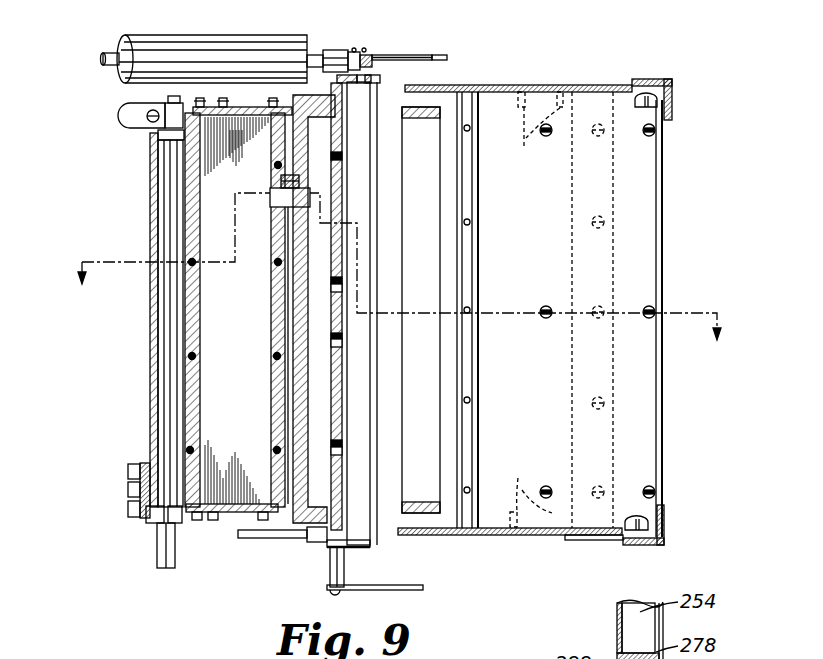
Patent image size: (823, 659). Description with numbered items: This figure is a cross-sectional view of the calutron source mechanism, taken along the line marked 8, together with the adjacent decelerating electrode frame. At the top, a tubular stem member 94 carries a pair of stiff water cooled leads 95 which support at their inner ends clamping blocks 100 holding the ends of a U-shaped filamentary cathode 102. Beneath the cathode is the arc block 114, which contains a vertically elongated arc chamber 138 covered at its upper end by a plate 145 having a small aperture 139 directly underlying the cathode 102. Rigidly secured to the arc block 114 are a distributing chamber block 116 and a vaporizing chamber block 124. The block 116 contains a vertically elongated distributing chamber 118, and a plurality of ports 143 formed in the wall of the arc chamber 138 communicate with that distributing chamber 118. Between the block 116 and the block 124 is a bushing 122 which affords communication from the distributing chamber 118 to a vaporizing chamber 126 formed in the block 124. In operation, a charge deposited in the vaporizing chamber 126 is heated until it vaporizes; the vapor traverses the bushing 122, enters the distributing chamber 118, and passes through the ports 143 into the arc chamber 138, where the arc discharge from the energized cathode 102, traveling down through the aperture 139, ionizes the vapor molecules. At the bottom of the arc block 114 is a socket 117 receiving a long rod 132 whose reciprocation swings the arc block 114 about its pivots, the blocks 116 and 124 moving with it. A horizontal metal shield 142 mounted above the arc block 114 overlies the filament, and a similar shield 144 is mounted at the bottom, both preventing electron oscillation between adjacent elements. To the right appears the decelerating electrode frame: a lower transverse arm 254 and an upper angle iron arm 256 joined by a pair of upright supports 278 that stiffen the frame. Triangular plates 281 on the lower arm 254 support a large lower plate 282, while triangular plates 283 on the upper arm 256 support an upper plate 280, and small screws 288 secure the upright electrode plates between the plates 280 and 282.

The section line 8- 8 is at (396, 282).
The tubular stem member 94 is at (247, 33).
The water cooled leads 95 is at (105, 62).
The clamping blocks 100 is at (333, 53).
The filamentary cathode 102 is at (384, 55).
The arc block 114 is at (362, 546).
The distributing chamber block 116 is at (290, 517).
The socket 117 is at (315, 543).
The distributing chamber 118 is at (308, 372).
The bushing 122 is at (275, 182).
The vaporizing chamber block 124 is at (235, 515).
The vaporizing chamber 126 is at (211, 336).
The long rod 132 is at (288, 540).
The arc chamber 138 is at (362, 194).
The aperture 139 is at (380, 74).
The horizontal metal shield 142 is at (434, 54).
The ports 143 is at (337, 285).
The shield 144 is at (423, 588).
The plate 145 is at (372, 54).
The lower transverse arm 254 is at (666, 528).
The upper angle iron arm 256 is at (673, 105).
The upright supports 278 is at (665, 252).
The upper plate 280 is at (495, 84).
The triangular plates 281 is at (608, 541).
The lower plate 282 is at (530, 537).
The triangular plates 283 is at (655, 92).
The small screws 288 is at (534, 309).